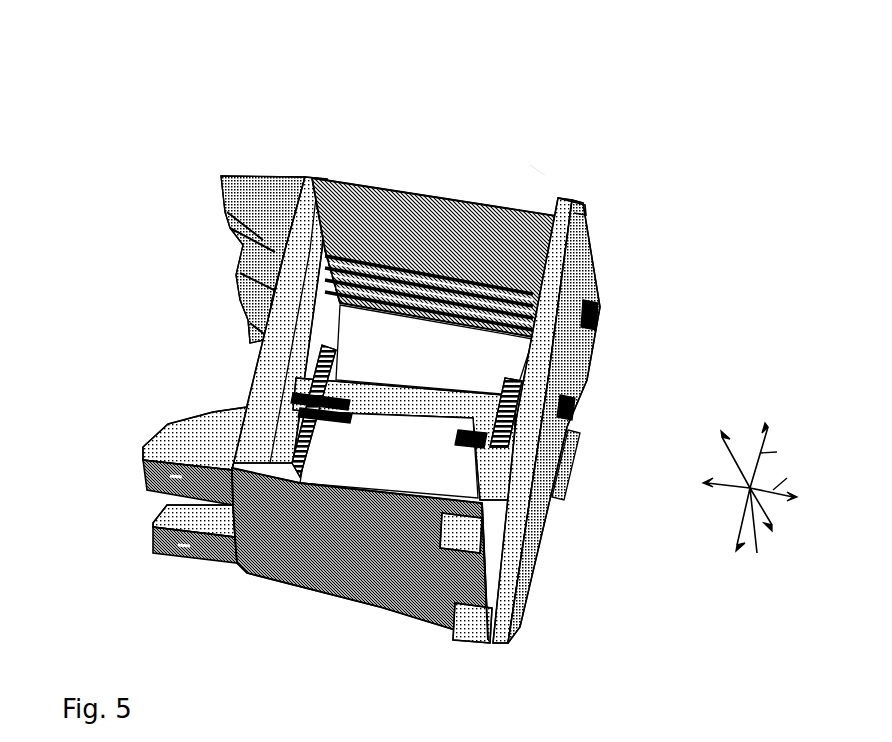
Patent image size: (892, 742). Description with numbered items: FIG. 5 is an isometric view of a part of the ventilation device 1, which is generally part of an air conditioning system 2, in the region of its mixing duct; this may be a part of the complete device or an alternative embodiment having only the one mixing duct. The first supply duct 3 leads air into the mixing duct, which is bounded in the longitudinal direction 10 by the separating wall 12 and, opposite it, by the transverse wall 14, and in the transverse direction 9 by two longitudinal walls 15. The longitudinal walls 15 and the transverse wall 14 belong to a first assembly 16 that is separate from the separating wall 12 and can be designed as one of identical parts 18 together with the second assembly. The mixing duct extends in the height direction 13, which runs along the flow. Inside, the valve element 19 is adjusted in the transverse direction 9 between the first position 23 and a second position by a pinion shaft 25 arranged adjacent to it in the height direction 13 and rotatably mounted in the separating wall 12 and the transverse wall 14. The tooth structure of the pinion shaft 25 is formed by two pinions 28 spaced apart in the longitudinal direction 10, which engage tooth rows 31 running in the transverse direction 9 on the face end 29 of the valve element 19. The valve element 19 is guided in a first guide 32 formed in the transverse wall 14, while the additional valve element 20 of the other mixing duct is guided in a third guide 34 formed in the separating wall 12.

The ventilation device 1 is at (87, 113).
The air conditioning system 2 is at (86, 112).
The first supply duct 3 is at (422, 412).
The transverse direction 9 is at (780, 450).
The longitudinal direction 10 is at (797, 478).
The separating wall 12 is at (587, 264).
The height direction 13 is at (750, 514).
The transverse wall 14 is at (253, 383).
The longitudinal walls 15 is at (305, 577).
The first assembly 16 is at (532, 163).
The identical parts 18 is at (404, 439).
The valve element 19 is at (458, 482).
The additional valve element 20 is at (500, 380).
The first position 23 is at (437, 257).
The pinion shaft 25 is at (358, 372).
The pinions 28 is at (323, 423).
The face end 29 is at (427, 478).
The tooth row 31 is at (295, 480).
The first guide 32 is at (347, 263).
The third guide 34 is at (588, 382).